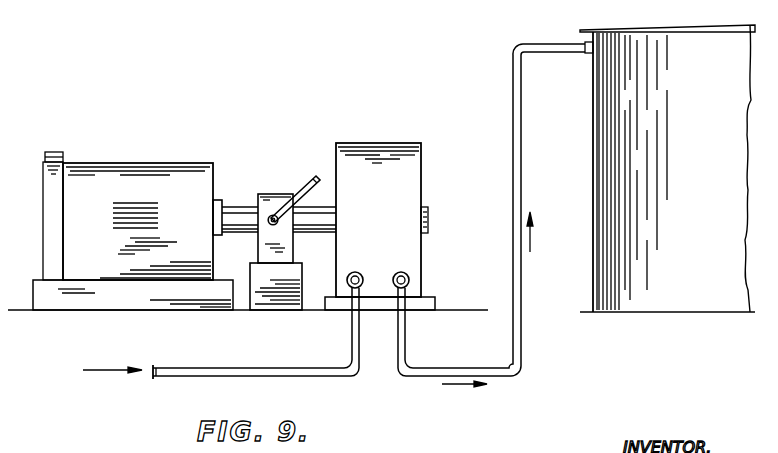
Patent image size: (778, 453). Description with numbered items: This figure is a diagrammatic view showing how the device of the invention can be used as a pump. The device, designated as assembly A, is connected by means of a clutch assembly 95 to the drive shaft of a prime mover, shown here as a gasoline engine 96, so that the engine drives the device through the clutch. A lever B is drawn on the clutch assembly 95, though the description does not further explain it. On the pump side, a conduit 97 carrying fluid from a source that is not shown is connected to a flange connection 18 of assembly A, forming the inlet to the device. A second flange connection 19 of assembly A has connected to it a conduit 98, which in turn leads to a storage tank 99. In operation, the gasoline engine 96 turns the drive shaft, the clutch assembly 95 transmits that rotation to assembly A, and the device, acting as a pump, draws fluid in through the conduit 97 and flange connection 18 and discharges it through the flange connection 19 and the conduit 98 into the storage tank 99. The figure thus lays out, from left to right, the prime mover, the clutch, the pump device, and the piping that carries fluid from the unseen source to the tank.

The gasoline engine 96 is at (140, 180).
The clutch assembly 95 is at (268, 197).
The clutch lever B is at (320, 218).
The device A is at (400, 150).
The flange connection 18 is at (348, 278).
The flange connection 19 is at (409, 277).
The conduit 97 is at (260, 368).
The conduit 98 is at (513, 183).
The storage tank 99 is at (613, 145).